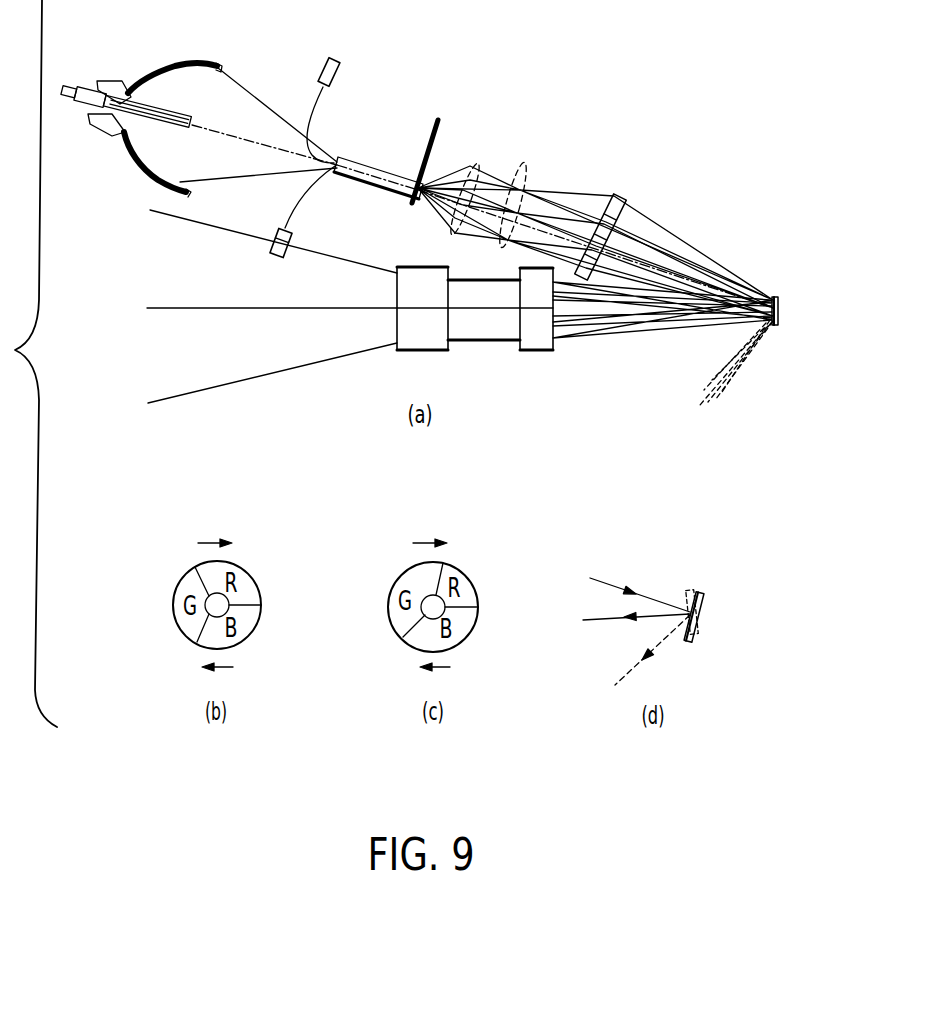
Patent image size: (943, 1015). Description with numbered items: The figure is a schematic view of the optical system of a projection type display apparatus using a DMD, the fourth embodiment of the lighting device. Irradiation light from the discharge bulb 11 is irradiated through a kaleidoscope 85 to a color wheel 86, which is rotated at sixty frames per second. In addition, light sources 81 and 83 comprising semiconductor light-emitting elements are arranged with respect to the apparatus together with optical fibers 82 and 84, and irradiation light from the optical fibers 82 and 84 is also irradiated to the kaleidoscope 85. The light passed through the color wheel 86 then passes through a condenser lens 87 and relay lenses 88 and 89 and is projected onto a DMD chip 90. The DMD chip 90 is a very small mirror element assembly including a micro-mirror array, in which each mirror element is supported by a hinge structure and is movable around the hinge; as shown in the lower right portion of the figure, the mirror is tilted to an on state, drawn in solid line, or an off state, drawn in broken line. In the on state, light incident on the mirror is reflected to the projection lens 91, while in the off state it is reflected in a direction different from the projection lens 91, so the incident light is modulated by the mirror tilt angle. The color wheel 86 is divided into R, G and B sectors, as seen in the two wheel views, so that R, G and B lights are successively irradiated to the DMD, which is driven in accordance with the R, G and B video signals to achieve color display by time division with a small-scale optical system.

The discharge bulb 11 is at (178, 62).
The light source 81 is at (332, 59).
The optical fiber 82 is at (318, 114).
The light source 83 is at (297, 238).
The optical fiber 84 is at (303, 187).
The kaleidoscope 85 is at (374, 188).
The color wheel 86 is at (428, 130).
The condenser lens 87 is at (477, 168).
The relay lens 88 is at (520, 185).
The relay lens 89 is at (618, 202).
The DMD chip 90 is at (775, 296).
The projection lens 91 is at (493, 345).